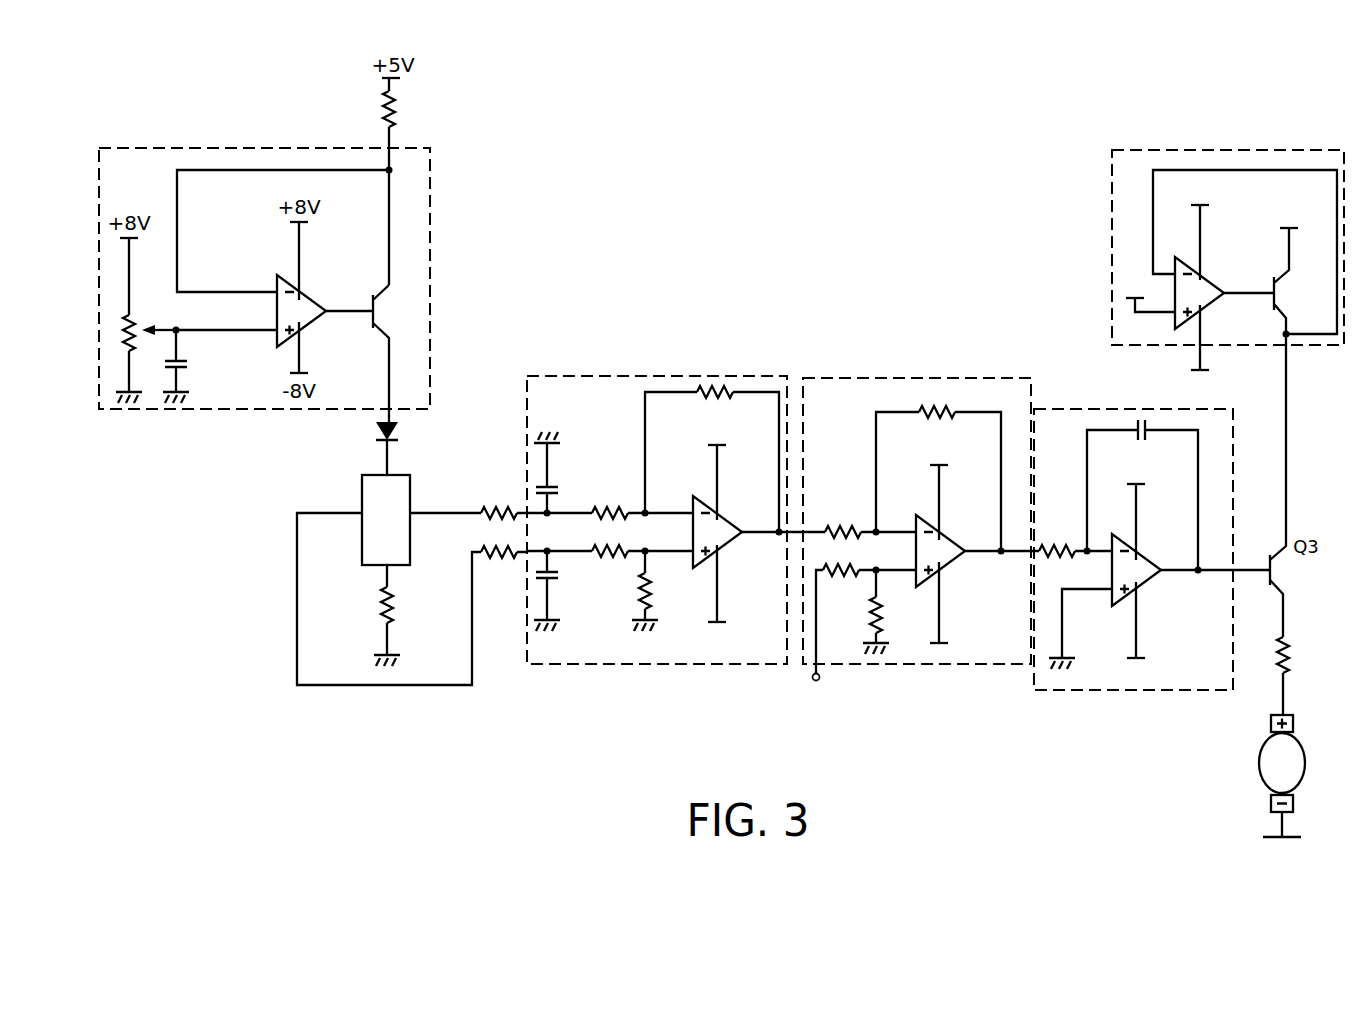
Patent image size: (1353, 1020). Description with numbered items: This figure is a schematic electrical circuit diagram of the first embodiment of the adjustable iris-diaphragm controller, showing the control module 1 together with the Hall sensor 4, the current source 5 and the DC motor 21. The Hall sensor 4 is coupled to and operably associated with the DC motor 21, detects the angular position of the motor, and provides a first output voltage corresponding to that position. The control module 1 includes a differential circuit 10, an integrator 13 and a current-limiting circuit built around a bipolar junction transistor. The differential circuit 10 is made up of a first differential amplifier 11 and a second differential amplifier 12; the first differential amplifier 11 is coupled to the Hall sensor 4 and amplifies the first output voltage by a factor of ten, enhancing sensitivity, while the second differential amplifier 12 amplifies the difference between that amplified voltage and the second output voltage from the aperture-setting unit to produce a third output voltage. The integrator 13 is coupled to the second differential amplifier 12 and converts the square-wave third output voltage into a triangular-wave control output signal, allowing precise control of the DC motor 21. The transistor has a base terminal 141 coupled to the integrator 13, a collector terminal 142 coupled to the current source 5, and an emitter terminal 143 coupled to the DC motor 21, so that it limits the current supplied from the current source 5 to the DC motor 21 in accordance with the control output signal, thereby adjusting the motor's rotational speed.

The control module 1 is at (927, 335).
The Hall sensor 4 is at (375, 545).
The current source 5 is at (1188, 150).
The differential circuit 10 is at (769, 362).
The first differential amplifier 11 is at (623, 664).
The second differential amplifier 12 is at (900, 655).
The integrator 13 is at (1085, 690).
The DC motor 21 is at (1262, 752).
The base terminal 141 is at (1248, 575).
The collector terminal 142 is at (1283, 555).
The emitter terminal 143 is at (1278, 577).